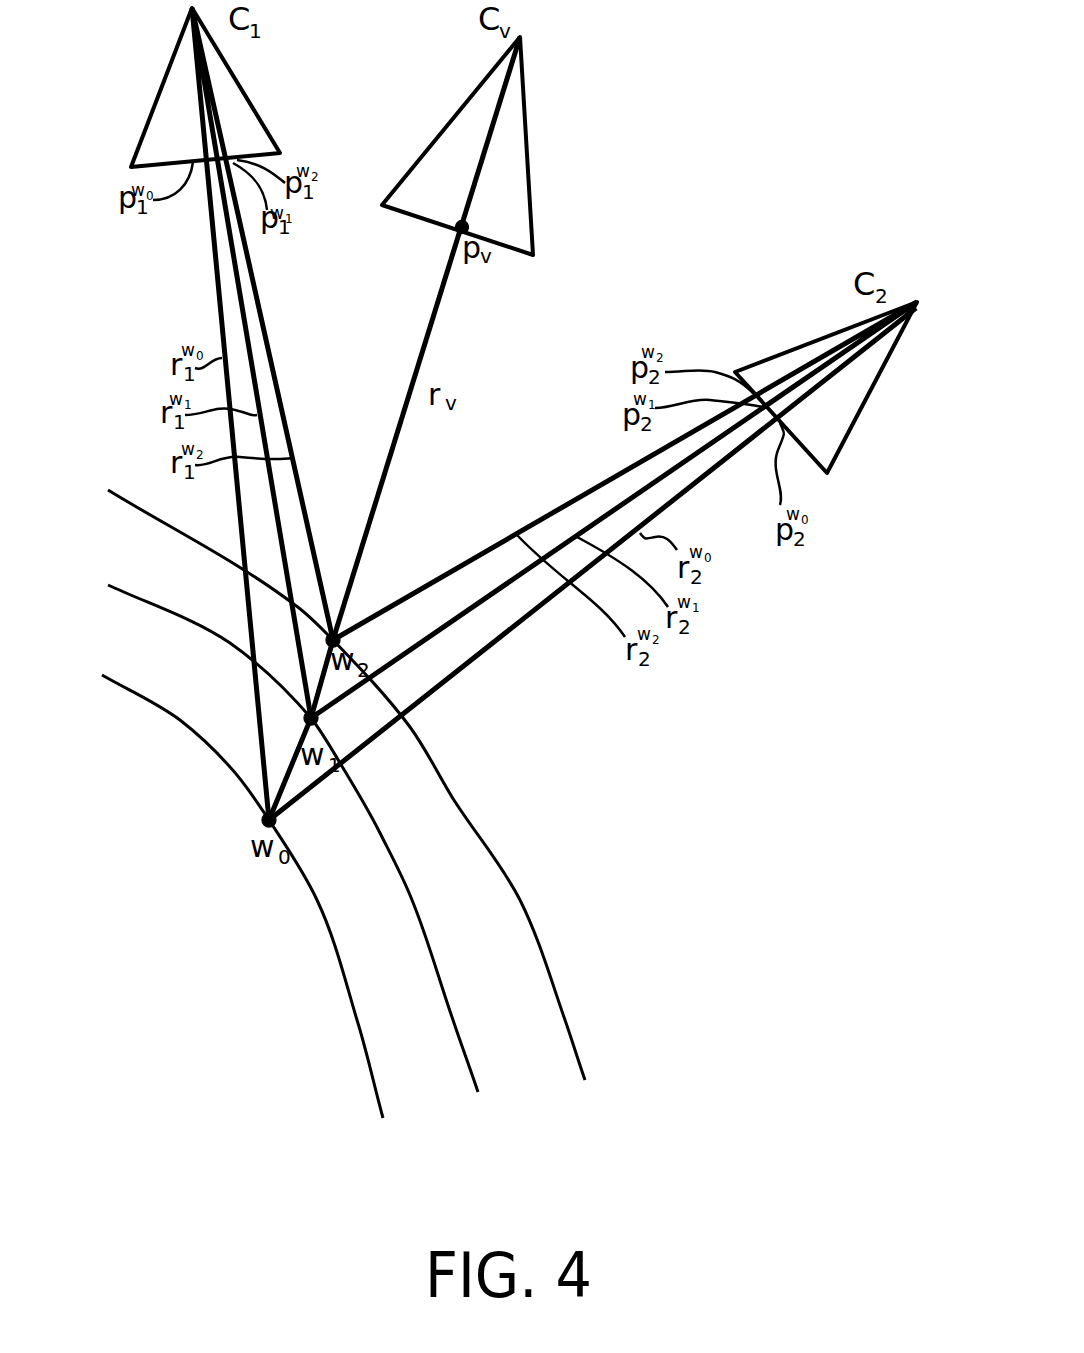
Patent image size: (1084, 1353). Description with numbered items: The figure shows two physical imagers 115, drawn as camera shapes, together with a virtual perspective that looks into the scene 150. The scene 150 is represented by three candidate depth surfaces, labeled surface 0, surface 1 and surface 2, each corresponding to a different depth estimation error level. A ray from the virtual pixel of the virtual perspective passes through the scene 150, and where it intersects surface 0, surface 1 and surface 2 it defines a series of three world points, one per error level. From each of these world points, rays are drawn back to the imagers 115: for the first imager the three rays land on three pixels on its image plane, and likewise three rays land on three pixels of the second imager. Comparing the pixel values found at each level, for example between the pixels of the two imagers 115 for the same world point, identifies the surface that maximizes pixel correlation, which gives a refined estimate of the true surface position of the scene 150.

The imager 115 is at (171, 68).
The scene 150 is at (351, 820).
The surface 0 is at (261, 913).
The surface 1 is at (304, 864).
The surface 2 is at (127, 1045).